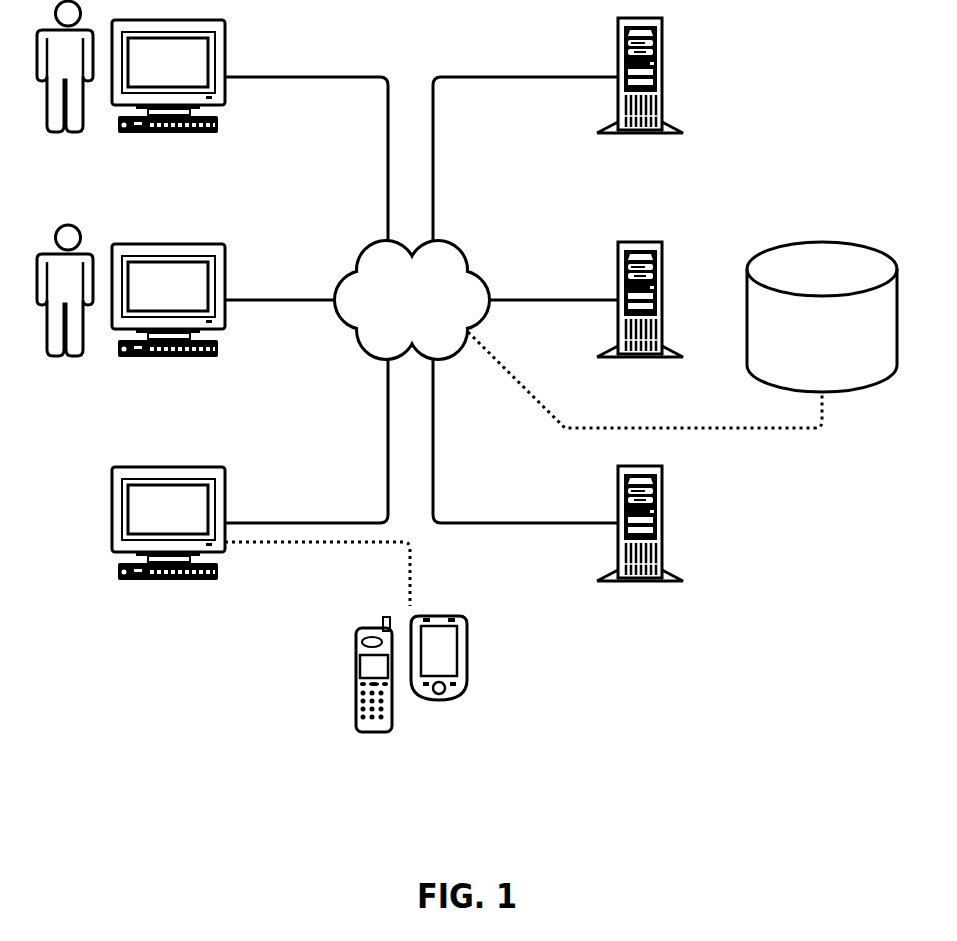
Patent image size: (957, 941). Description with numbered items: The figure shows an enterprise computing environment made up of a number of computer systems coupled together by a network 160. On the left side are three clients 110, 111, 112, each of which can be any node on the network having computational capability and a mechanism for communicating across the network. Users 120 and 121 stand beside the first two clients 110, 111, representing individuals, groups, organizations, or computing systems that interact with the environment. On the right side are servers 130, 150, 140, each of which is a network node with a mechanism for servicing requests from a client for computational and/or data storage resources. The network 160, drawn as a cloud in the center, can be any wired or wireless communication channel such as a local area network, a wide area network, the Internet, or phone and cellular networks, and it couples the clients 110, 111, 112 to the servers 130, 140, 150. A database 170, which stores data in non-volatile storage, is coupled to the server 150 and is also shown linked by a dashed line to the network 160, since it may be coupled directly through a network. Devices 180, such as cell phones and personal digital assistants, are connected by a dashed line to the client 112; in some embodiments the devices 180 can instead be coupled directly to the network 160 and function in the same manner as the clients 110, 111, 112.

The client 110 is at (168, 102).
The client 111 is at (168, 326).
The client 112 is at (168, 549).
The user 120 is at (65, 94).
The user 121 is at (65, 318).
The server 130 is at (640, 101).
The server 140 is at (640, 549).
The server 150 is at (640, 325).
The network 160 is at (412, 300).
The database 170 is at (822, 317).
The devices 180 is at (411, 707).